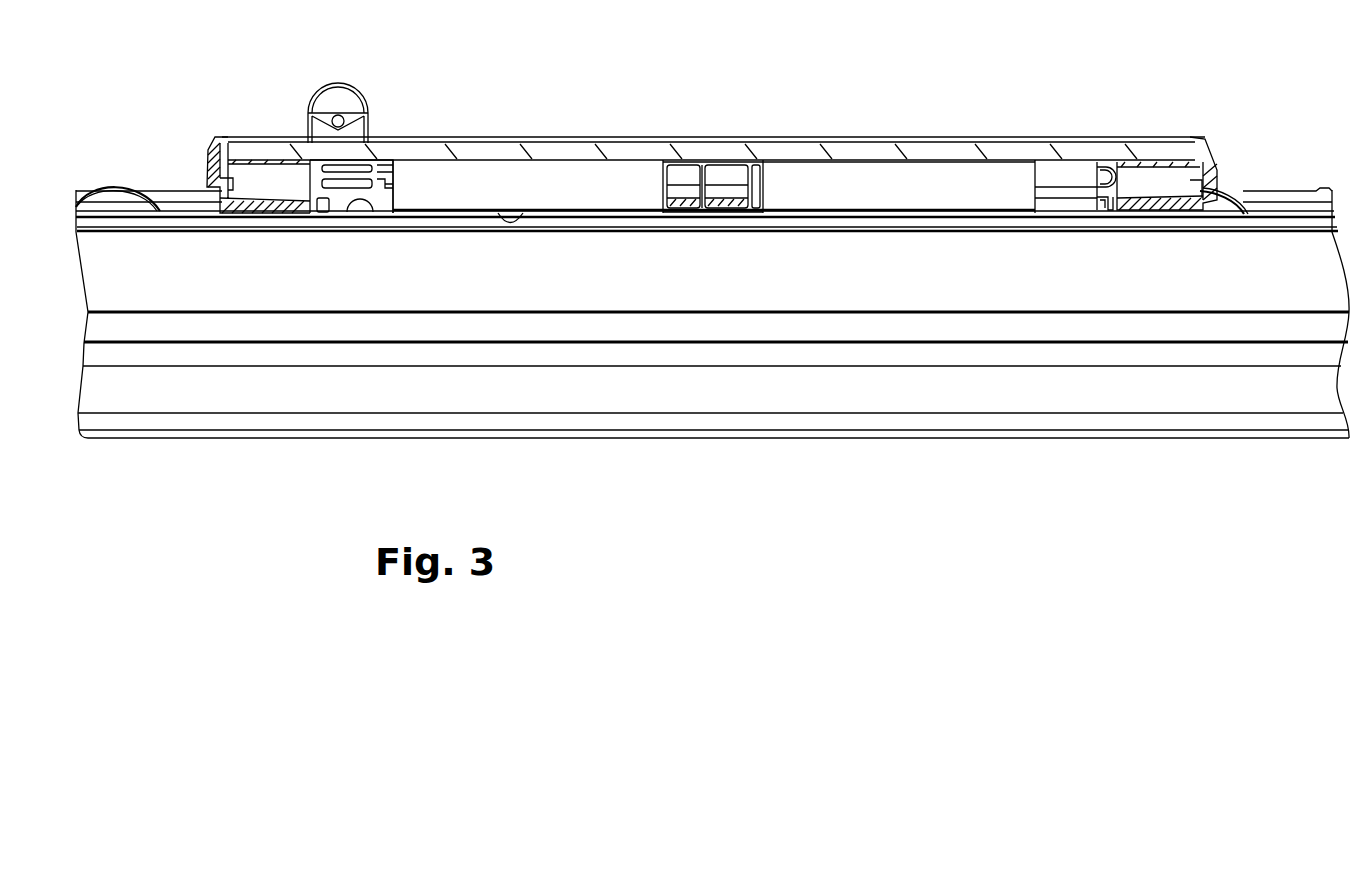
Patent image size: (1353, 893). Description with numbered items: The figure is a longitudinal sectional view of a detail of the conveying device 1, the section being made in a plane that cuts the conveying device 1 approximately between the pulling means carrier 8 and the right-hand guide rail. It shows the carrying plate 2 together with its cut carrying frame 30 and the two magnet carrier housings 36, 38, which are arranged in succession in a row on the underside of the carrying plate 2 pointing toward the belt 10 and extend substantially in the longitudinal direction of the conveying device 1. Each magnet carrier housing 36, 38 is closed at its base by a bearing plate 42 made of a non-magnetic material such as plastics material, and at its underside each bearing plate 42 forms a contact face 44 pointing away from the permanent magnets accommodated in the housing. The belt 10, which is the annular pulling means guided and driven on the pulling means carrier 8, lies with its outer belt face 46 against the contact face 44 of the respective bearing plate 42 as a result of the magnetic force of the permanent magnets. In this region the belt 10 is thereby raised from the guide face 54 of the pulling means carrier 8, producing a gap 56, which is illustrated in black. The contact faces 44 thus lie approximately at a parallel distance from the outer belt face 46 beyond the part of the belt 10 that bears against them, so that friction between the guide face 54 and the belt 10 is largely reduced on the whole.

The conveying device 1 is at (138, 82).
The carrying plate 2 is at (713, 150).
The pulling means carrier 8 is at (1203, 387).
The belt 10 is at (742, 210).
The carrying frame 30 is at (1204, 147).
The magnet carrier housing 36 is at (500, 199).
The magnet carrier housing 38 is at (896, 199).
The bearing plate 42 is at (443, 210).
The contact face 44 is at (521, 213).
The outer belt face 46 is at (373, 213).
The guide face 54 is at (1282, 214).
The gap 56 is at (828, 212).